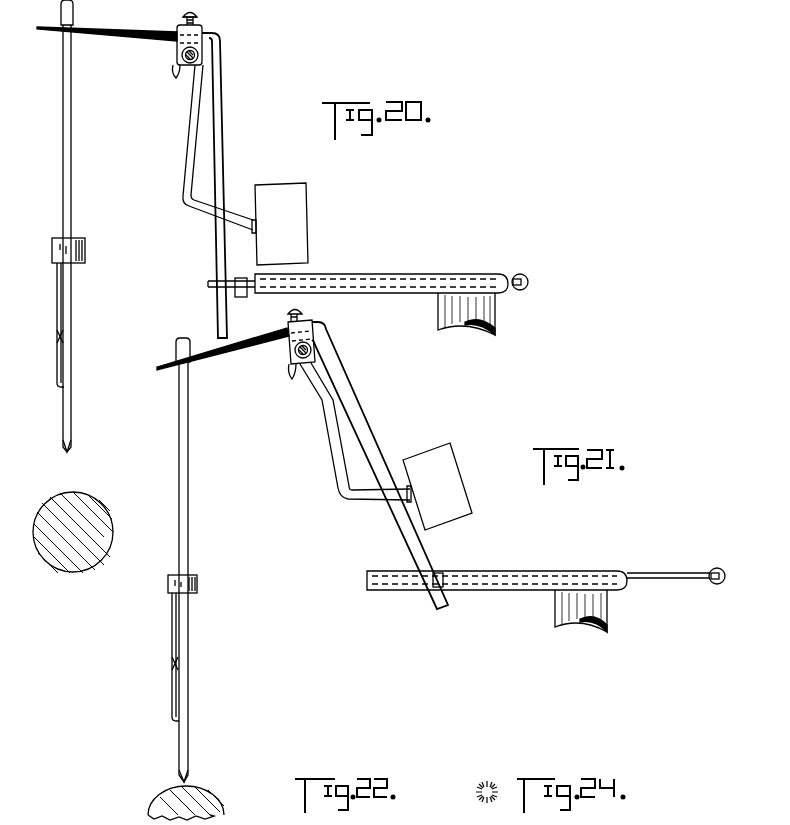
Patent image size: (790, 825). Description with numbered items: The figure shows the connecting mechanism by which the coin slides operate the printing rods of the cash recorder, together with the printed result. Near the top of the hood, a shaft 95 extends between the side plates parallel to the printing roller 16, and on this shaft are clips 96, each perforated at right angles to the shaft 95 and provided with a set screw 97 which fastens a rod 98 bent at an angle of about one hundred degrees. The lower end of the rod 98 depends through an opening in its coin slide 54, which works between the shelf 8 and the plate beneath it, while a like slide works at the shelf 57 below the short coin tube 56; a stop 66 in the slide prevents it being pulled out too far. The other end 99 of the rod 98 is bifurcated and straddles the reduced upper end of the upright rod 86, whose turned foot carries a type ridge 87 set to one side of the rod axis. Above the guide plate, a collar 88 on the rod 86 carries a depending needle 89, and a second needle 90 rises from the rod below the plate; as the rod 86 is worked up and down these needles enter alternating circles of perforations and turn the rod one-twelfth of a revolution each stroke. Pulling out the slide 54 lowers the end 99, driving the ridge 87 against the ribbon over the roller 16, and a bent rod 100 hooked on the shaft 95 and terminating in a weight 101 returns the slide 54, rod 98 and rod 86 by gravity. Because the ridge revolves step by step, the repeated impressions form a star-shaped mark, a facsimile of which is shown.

In FIG. 20, the shelf 8 is at (381, 273).
In FIG. 22, the roller 16 is at (230, 801).
In FIG. 20, the slide 54 is at (534, 280).
In FIG. 21, the slide 54 is at (730, 576).
In FIG. 20, the coin tube 56 is at (479, 314).
In FIG. 21, the coin tube 56 is at (595, 611).
In FIG. 21, the shelf 57 is at (598, 568).
In FIG. 20, the stop 66 is at (231, 277).
In FIG. 21, the stop 66 is at (444, 572).
In FIG. 20, the upright rod 86 is at (83, 238).
In FIG. 22, the upright rod 86 is at (198, 572).
In FIG. 20, the ridge 87 is at (71, 449).
In FIG. 22, the ridge 87 is at (190, 780).
In FIG. 20, the collar 88 is at (82, 248).
In FIG. 22, the collar 88 is at (197, 584).
In FIG. 20, the needle 89 is at (45, 323).
In FIG. 22, the needle 89 is at (162, 655).
In FIG. 20, the needle 90 is at (51, 374).
In FIG. 22, the needle 90 is at (165, 704).
In FIG. 20, the shaft 95 is at (182, 58).
In FIG. 21, the shaft 95 is at (295, 352).
In FIG. 20, the clip 96 is at (183, 22).
In FIG. 20, the set screw 97 is at (205, 13).
In FIG. 21, the set screw 97 is at (303, 318).
In FIG. 20, the rod 98 is at (226, 185).
In FIG. 21, the rod 98 is at (380, 465).
In FIG. 20, the bifurcated end 99 is at (105, 20).
In FIG. 21, the bifurcated end 99 is at (216, 349).
In FIG. 20, the bent rod 100 is at (207, 147).
In FIG. 21, the bent rod 100 is at (354, 431).
In FIG. 20, the weight 101 is at (280, 224).
In FIG. 21, the weight 101 is at (437, 486).